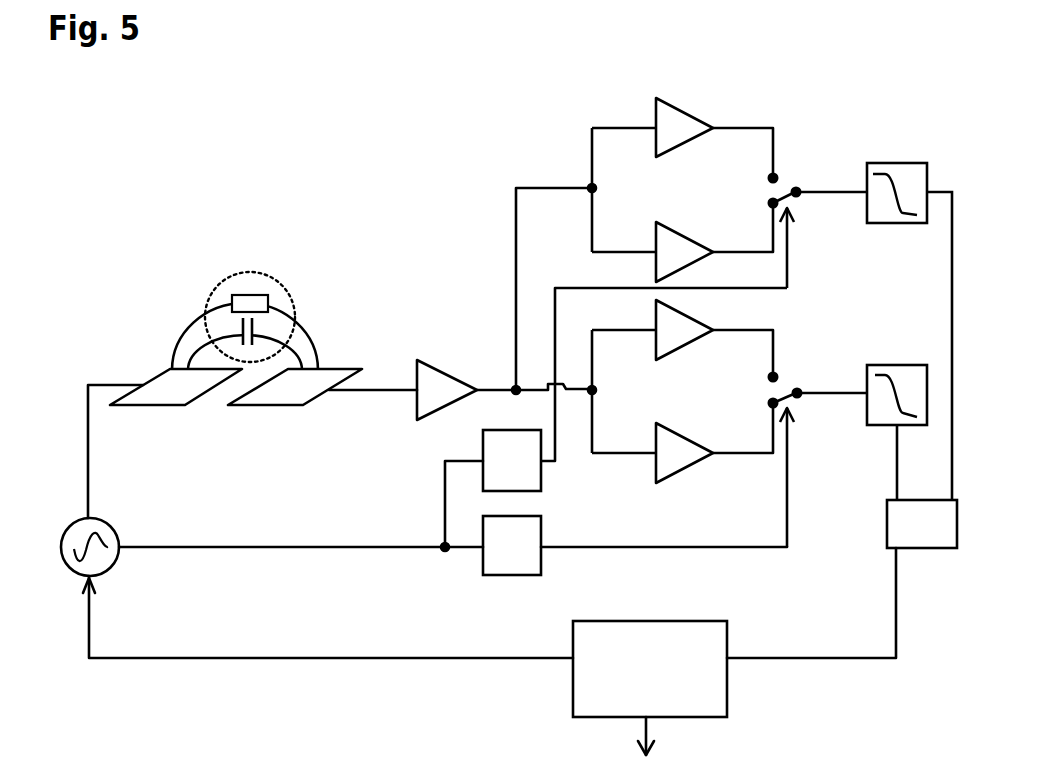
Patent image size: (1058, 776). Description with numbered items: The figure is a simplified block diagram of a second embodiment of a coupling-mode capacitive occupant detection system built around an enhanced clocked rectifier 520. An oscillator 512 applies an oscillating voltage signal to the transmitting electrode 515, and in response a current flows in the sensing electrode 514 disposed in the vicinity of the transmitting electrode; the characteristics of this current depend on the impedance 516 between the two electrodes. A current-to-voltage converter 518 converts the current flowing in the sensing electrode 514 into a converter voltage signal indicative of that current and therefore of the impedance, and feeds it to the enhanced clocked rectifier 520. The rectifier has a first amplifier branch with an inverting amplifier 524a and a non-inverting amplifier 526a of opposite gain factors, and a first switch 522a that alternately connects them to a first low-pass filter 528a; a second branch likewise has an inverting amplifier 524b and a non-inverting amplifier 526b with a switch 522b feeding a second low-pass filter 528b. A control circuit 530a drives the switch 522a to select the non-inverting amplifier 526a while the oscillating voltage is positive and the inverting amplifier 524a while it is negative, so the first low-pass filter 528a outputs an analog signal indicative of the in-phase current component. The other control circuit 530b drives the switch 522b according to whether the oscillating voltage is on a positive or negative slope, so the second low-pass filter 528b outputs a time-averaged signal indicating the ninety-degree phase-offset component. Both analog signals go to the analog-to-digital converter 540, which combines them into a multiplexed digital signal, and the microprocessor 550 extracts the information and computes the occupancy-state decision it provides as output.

The oscillator 512 is at (115, 527).
The sensing electrode 514 is at (270, 407).
The transmitting electrode 515 is at (147, 407).
The impedance 516 is at (298, 302).
The current-to-voltage converter 518 is at (443, 362).
The enhanced clocked rectifier 520 is at (556, 131).
The first switch 522a is at (790, 372).
The switch 522b is at (800, 206).
The inverting amplifier 524a is at (687, 345).
The inverting amplifier 524b is at (695, 140).
The non-inverting amplifier 526a is at (685, 425).
The non-inverting amplifier 526b is at (693, 233).
The first low-pass filter 528a is at (883, 363).
The second low-pass filter 528b is at (885, 225).
The control circuit 530a is at (507, 575).
The control circuit 530b is at (541, 480).
The analog-to-digital converter 540 is at (887, 523).
The microprocessor 550 is at (665, 620).